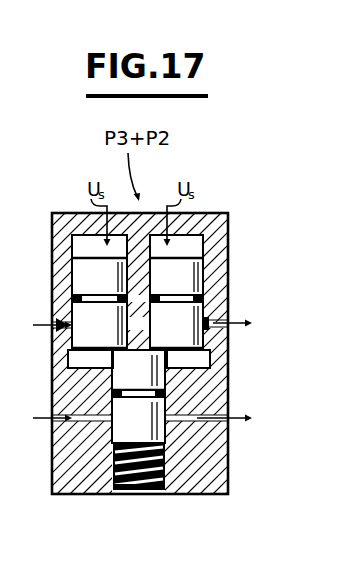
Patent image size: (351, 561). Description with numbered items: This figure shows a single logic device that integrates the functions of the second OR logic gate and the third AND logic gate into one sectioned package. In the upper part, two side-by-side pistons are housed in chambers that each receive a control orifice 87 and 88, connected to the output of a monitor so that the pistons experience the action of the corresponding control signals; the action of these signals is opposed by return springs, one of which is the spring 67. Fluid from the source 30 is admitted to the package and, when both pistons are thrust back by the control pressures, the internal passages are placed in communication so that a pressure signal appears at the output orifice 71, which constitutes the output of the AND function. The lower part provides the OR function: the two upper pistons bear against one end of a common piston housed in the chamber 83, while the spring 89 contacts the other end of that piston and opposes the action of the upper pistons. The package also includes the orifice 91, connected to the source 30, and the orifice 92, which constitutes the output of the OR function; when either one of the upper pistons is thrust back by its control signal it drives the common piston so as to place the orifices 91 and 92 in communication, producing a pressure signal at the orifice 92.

The control orifice 87 is at (66, 213).
The control orifice 88 is at (203, 213).
The spring 67 is at (66, 310).
The output orifice 71 is at (212, 313).
The source 30 is at (35, 327).
The orifice 91 is at (80, 414).
The orifice 92 is at (217, 410).
The chamber 83 is at (149, 482).
The spring 89 is at (128, 484).